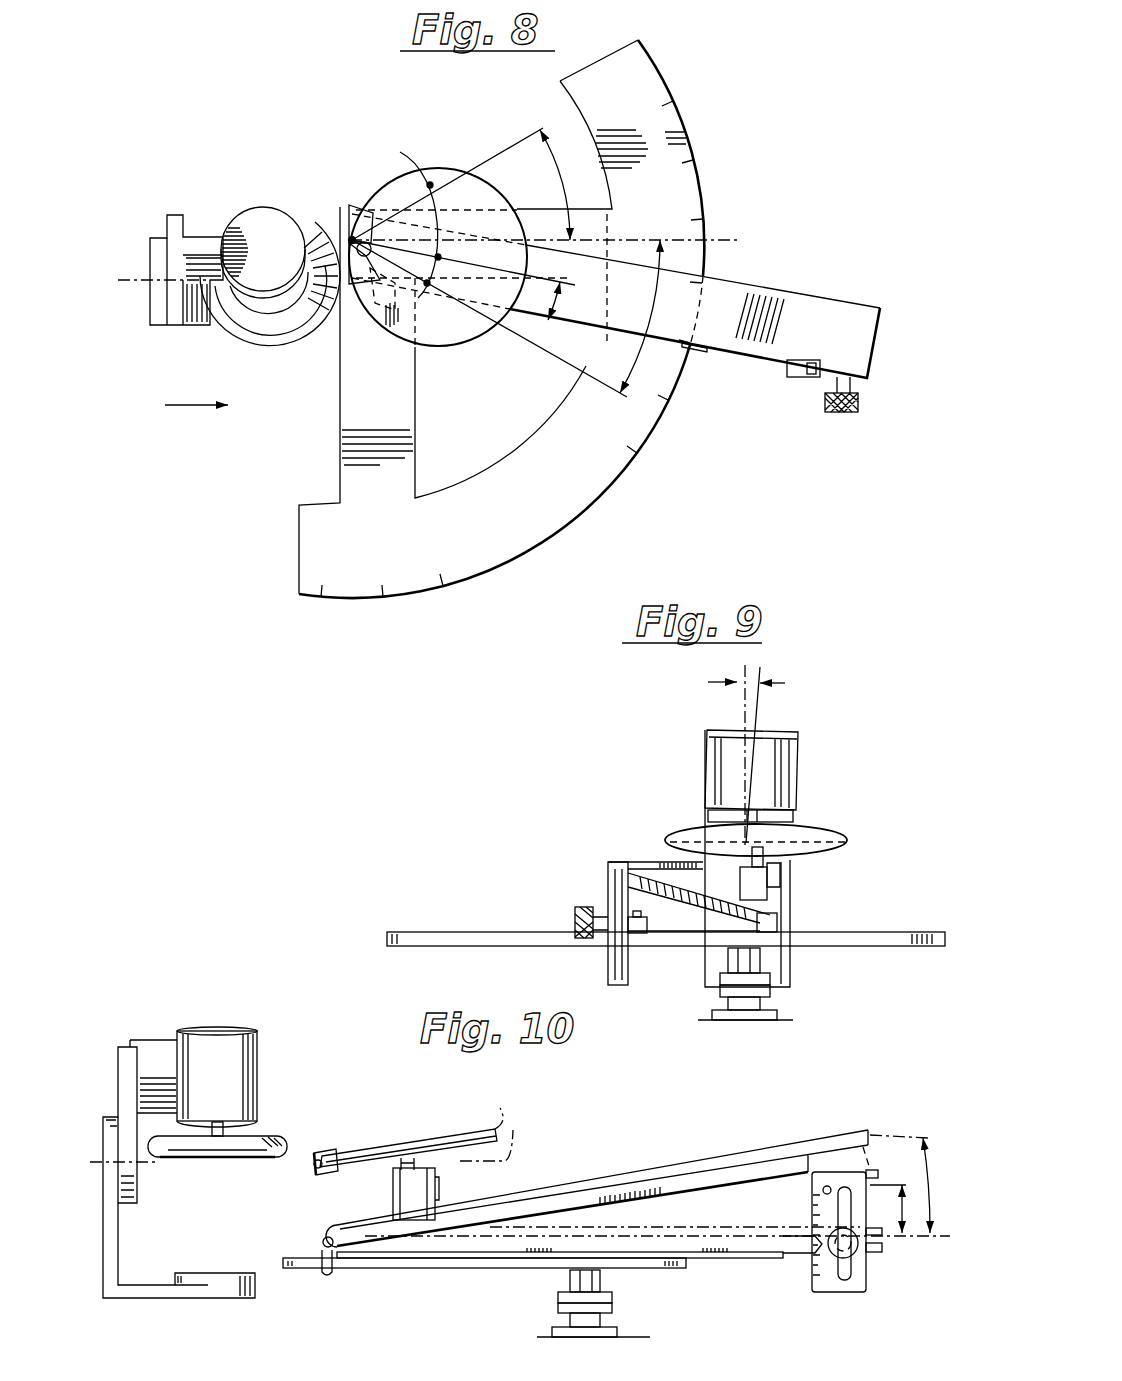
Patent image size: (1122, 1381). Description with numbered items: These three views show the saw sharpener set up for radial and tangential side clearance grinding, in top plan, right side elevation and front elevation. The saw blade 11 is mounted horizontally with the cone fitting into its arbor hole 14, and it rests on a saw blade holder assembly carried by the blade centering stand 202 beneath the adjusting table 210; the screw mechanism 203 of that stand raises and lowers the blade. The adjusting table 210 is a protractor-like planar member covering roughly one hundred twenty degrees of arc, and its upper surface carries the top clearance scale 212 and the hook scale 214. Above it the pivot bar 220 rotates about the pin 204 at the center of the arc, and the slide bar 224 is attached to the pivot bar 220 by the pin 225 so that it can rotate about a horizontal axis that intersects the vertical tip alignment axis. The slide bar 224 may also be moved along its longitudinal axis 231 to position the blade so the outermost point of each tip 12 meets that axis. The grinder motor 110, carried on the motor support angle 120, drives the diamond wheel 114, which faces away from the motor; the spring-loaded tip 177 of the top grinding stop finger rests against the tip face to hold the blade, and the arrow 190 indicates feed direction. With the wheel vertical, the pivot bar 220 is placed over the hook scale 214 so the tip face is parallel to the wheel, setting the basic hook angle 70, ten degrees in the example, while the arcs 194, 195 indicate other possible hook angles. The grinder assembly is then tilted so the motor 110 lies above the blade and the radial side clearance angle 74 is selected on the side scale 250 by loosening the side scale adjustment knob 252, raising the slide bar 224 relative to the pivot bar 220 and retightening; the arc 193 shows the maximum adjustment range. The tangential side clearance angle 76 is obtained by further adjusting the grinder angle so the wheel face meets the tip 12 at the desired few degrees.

In FIG. 8, the saw blade 11 is at (439, 347).
In FIG. 9, the saw blade 11 is at (820, 826).
In FIG. 10, the saw blade 11 is at (505, 1108).
In FIG. 8, the tip 12 is at (354, 207).
In FIG. 9, the tip 12 is at (800, 862).
In FIG. 10, the tip 12 is at (323, 1152).
In FIG. 8, the arbor hole 14 is at (402, 154).
In FIG. 8, the hook angle 70 is at (569, 262).
In FIG. 10, the radial side clearance angle 74 is at (905, 1212).
In FIG. 9, the tangential side clearance angle 76 is at (752, 677).
In FIG. 8, the motor 110 is at (256, 214).
In FIG. 9, the motor 110 is at (707, 767).
In FIG. 10, the motor 110 is at (198, 1030).
In FIG. 8, the diamond wheel 114 is at (226, 338).
In FIG. 10, the diamond wheel 114 is at (311, 1160).
In FIG. 8, the motor support angle 120 is at (150, 248).
In FIG. 9, the motor support angle 120 is at (791, 892).
In FIG. 10, the motor support angle 120 is at (110, 1228).
In FIG. 8, the spring-loaded tip 177 is at (318, 340).
In FIG. 8, the arrow 190 is at (200, 406).
In FIG. 10, the arc 193 is at (925, 1172).
In FIG. 8, the arc 194 is at (558, 174).
In FIG. 8, the arc 195 is at (645, 343).
In FIG. 9, the blade centering stand 202 is at (696, 1005).
In FIG. 10, the blade centering stand 202 is at (556, 1305).
In FIG. 9, the screw mechanism 203 is at (775, 1012).
In FIG. 10, the screw mechanism 203 is at (590, 1320).
In FIG. 8, the pin 204 is at (348, 238).
In FIG. 10, the pin 204 is at (329, 1275).
In FIG. 8, the adjusting table 210 is at (552, 508).
In FIG. 9, the adjusting table 210 is at (867, 932).
In FIG. 10, the adjusting table 210 is at (655, 1268).
In FIG. 8, the top clearance scale 212 is at (386, 614).
In FIG. 8, the hook scale 214 is at (714, 178).
In FIG. 10, the pivot bar 220 is at (767, 1259).
In FIG. 8, the slide bar 224 is at (785, 292).
In FIG. 9, the slide bar 224 is at (627, 868).
In FIG. 10, the slide bar 224 is at (692, 1190).
In FIG. 10, the pin 225 is at (324, 1231).
In FIG. 8, the longitudinal axis 231 is at (507, 146).
In FIG. 9, the side scale 250 is at (608, 912).
In FIG. 10, the side scale 250 is at (817, 1270).
In FIG. 8, the side scale adjustment knob 252 is at (843, 415).
In FIG. 9, the side scale adjustment knob 252 is at (577, 922).
In FIG. 10, the side scale adjustment knob 252 is at (860, 1253).